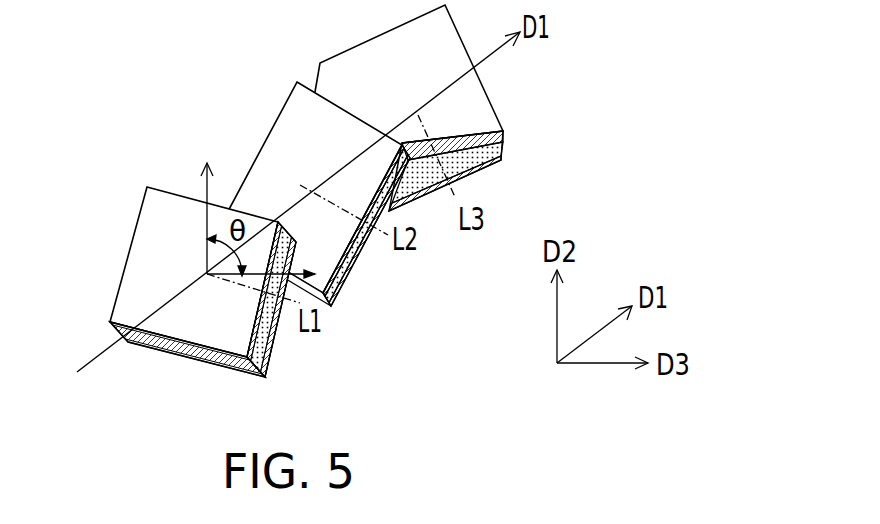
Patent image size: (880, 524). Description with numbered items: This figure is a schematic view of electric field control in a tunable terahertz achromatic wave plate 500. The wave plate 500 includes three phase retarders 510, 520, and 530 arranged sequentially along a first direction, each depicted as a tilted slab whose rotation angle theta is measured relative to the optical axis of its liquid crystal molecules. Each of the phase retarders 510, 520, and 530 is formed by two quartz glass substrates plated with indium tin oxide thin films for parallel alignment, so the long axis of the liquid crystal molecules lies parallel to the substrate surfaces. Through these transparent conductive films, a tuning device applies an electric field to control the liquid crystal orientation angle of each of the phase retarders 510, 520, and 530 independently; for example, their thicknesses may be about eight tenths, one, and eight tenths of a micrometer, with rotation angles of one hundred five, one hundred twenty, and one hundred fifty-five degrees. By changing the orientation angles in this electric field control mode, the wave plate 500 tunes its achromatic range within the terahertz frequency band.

The tunable terahertz achromatic wave plate 500 is at (463, 372).
The first phase retarder 510 is at (150, 205).
The second phase retarder 520 is at (293, 113).
The third phase retarder 530 is at (395, 30).